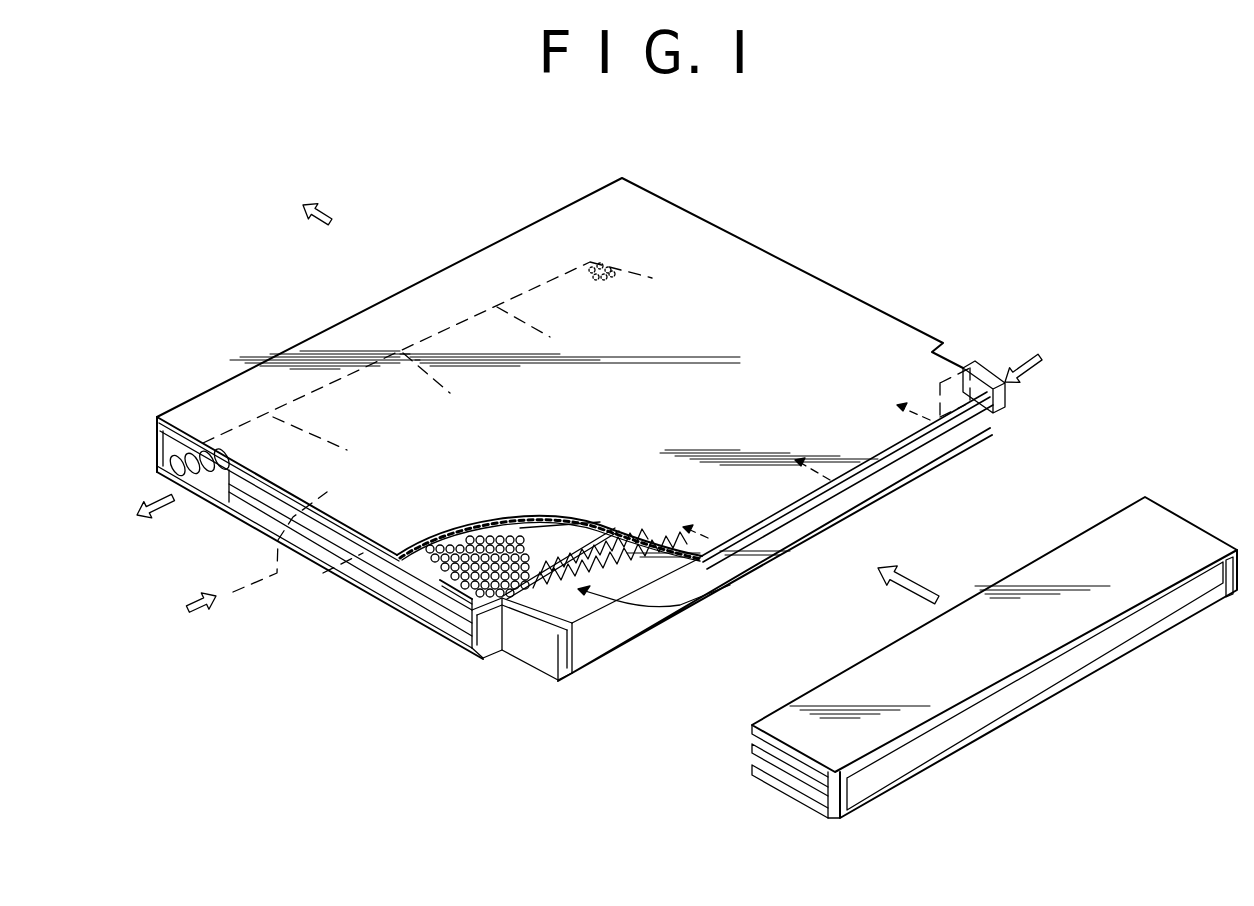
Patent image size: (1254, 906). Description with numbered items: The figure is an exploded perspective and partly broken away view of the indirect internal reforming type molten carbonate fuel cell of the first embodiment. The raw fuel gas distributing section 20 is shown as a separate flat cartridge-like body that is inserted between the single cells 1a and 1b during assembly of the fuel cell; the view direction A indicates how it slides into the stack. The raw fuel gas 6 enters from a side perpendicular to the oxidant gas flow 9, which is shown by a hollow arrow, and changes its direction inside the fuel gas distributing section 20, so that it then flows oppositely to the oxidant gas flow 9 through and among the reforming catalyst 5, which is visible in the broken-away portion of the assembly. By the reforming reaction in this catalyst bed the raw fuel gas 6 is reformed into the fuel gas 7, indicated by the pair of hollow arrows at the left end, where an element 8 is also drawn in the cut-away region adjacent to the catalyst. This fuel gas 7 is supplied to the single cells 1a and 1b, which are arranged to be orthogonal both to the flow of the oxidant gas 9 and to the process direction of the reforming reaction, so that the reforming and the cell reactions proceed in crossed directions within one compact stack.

The single cell 1a is at (425, 592).
The single cell 1b is at (383, 556).
The reforming catalyst 5 is at (590, 262).
The raw fuel gas 6 is at (1030, 357).
The fuel gas 7 is at (196, 604).
The heating element 8 is at (540, 566).
The oxidant gas flow 9 is at (328, 207).
The raw fuel gas distributing section 20 is at (795, 720).
The view direction arrow A is at (920, 600).